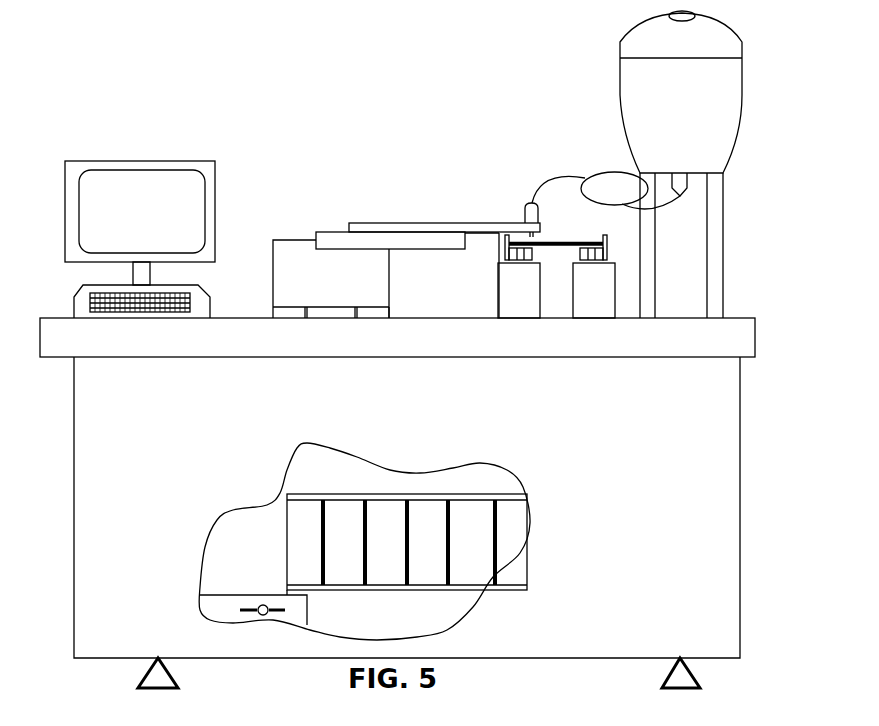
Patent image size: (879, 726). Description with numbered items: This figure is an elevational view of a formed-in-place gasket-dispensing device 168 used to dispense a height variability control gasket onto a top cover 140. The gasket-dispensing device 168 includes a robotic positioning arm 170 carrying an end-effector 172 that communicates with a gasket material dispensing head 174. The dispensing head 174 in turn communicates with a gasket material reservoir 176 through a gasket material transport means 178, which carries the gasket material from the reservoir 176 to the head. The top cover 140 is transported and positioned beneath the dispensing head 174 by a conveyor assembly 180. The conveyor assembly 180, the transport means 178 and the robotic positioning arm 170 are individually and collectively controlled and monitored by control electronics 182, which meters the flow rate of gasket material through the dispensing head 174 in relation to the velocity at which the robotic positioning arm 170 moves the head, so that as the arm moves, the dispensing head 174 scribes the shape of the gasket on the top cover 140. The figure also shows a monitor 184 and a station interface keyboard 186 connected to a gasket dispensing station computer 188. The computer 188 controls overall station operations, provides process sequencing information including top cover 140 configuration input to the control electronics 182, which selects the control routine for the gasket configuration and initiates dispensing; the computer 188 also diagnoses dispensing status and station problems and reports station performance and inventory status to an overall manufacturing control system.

The gasket-dispensing device 168 is at (318, 195).
The monitor 184 is at (190, 211).
The station interface keyboard 186 is at (200, 300).
The robotic positioning arm 170 is at (308, 277).
The end-effector 172 is at (505, 223).
The gasket material dispensing head 174 is at (528, 203).
The gasket material transport means 178 is at (613, 168).
The gasket material reservoir 176 is at (619, 70).
The conveyor assembly 180 is at (510, 288).
The top cover 140 is at (555, 240).
The control electronics 182 is at (440, 598).
The gasket dispensing station computer 188 is at (228, 607).